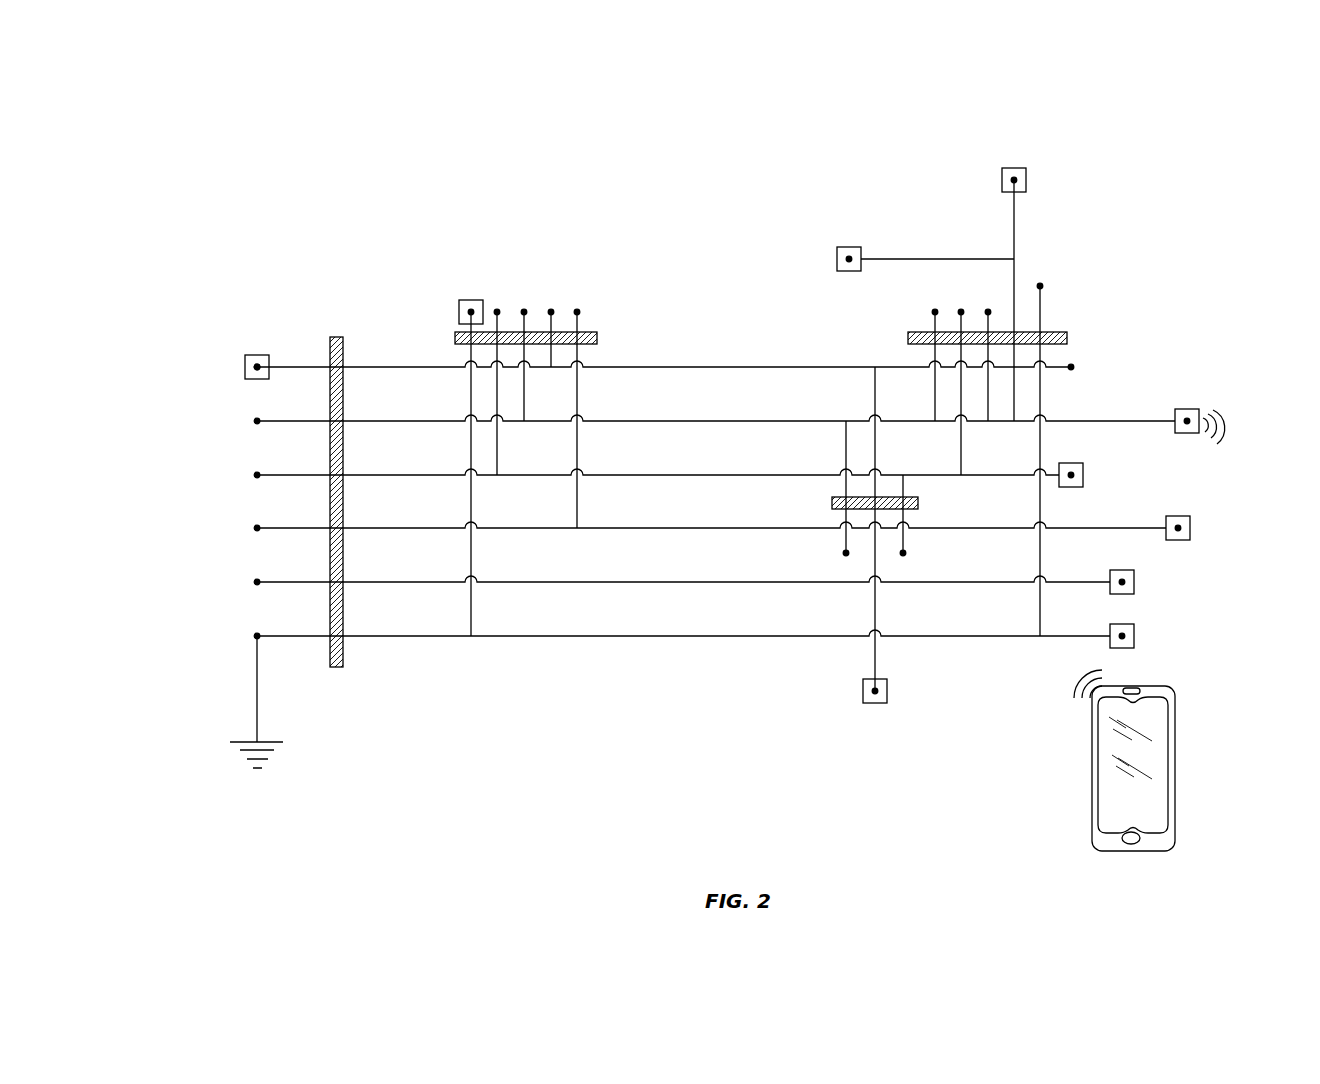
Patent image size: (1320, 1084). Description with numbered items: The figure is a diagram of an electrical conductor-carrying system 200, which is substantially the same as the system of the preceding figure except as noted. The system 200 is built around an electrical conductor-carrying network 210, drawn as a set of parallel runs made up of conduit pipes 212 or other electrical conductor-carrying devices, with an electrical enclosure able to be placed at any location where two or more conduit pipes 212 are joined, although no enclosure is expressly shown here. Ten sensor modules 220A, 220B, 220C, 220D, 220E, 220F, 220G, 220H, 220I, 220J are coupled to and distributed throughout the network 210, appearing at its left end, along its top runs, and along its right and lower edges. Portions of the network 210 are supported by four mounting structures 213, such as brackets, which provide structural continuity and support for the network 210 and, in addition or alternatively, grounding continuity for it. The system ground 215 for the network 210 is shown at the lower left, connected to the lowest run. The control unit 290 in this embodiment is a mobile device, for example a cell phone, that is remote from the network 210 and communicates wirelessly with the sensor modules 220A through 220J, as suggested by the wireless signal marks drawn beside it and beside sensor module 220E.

The electrical conductor-carrying system 200 is at (260, 148).
The electrical conductor-carrying network 210 is at (650, 652).
The conduit pipes 212 is at (312, 373).
The mounting structures 213 is at (333, 337).
The system ground 215 is at (247, 742).
The sensor module 220A is at (257, 352).
The sensor module 220B is at (471, 300).
The sensor module 220C is at (1014, 168).
The sensor module 220D is at (849, 247).
The sensor module 220E is at (1187, 409).
The sensor module 220F is at (1071, 463).
The sensor module 220G is at (1178, 516).
The sensor module 220H is at (1122, 570).
The sensor module 220I is at (1122, 624).
The sensor module 220J is at (878, 679).
The control unit 290 is at (1087, 852).